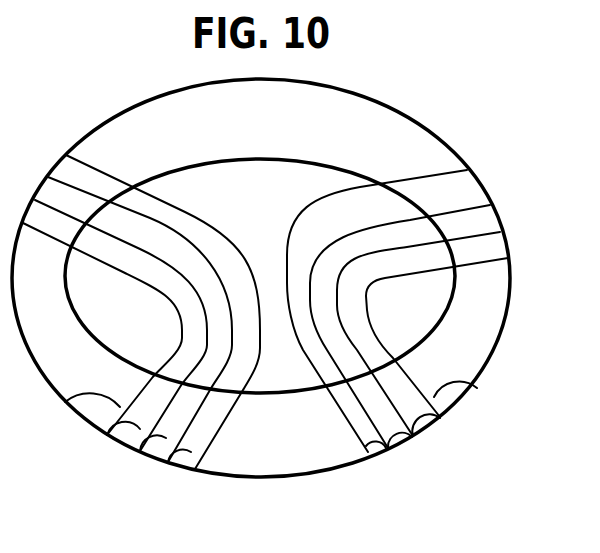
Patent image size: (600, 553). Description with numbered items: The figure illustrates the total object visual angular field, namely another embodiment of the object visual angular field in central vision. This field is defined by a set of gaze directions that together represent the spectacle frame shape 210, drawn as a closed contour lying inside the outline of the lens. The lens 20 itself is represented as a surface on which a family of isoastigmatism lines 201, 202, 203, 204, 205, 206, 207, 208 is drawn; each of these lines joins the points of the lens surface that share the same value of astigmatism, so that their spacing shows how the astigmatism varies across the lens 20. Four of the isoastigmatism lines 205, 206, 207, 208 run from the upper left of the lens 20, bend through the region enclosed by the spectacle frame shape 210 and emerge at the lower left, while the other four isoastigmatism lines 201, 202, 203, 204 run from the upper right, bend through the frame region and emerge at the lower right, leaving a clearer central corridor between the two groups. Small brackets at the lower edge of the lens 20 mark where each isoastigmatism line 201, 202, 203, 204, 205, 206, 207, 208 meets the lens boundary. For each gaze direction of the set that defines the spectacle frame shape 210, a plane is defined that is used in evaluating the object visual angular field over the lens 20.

The lens 20 is at (403, 112).
The spectacle frame shape 210 is at (182, 170).
The isoastigmatism line 201 is at (386, 448).
The isoastigmatism line 202 is at (412, 437).
The isoastigmatism line 203 is at (440, 418).
The isoastigmatism line 204 is at (477, 388).
The isoastigmatism line 205 is at (168, 462).
The isoastigmatism line 206 is at (140, 451).
The isoastigmatism line 207 is at (107, 435).
The isoastigmatism line 208 is at (65, 402).